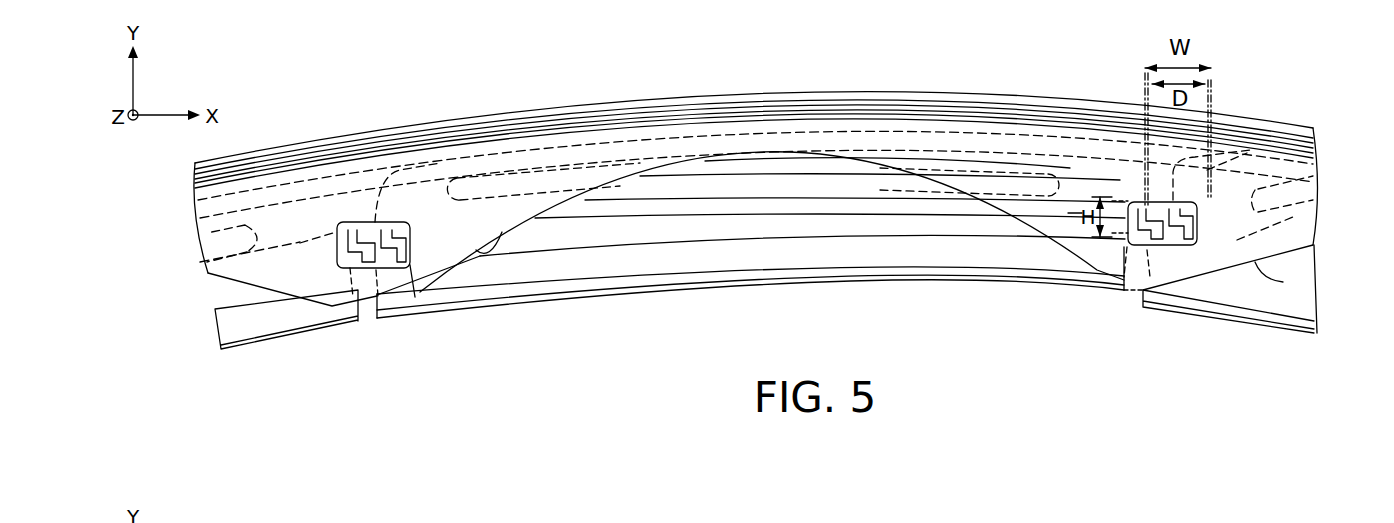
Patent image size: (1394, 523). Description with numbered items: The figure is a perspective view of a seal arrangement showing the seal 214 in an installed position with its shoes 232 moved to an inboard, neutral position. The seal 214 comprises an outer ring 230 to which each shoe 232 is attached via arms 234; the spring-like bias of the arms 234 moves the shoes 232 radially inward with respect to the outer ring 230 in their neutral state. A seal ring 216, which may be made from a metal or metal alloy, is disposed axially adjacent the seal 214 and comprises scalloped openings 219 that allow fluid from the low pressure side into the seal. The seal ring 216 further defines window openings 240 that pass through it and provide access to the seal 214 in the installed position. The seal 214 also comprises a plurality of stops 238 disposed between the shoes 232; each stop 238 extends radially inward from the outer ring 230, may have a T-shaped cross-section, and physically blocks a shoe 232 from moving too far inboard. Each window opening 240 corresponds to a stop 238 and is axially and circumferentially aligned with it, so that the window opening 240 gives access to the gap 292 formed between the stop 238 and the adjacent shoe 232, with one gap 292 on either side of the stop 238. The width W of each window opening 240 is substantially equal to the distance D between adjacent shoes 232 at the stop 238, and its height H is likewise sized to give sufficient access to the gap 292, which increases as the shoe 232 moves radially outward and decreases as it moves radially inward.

The seal 214 is at (762, 258).
The seal ring 216 is at (1142, 278).
The scalloped openings 219 is at (240, 282).
The outer ring 230 is at (363, 168).
The shoe 232 is at (305, 333).
The arms 234 is at (832, 176).
The stop 238 is at (370, 265).
The window openings 240 is at (398, 258).
The gap 292 is at (350, 230).